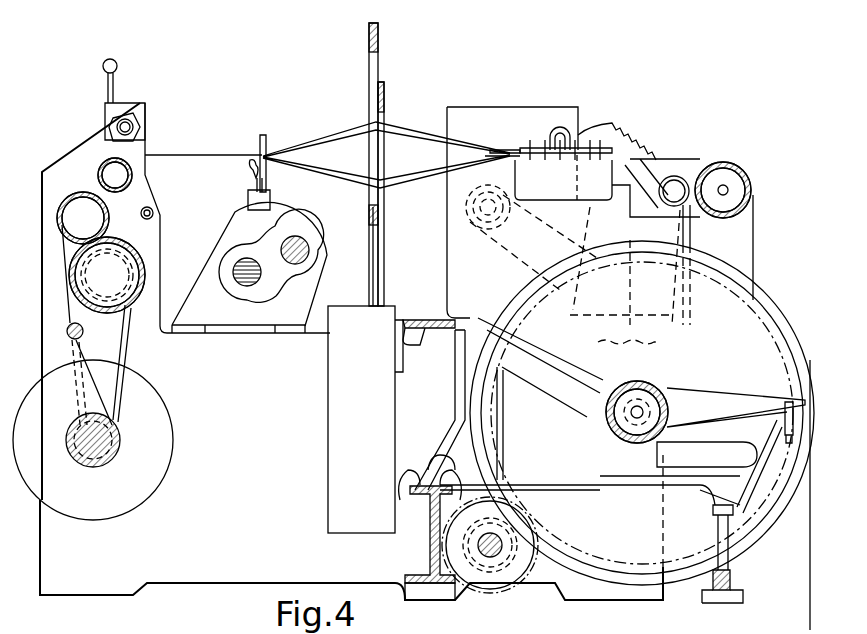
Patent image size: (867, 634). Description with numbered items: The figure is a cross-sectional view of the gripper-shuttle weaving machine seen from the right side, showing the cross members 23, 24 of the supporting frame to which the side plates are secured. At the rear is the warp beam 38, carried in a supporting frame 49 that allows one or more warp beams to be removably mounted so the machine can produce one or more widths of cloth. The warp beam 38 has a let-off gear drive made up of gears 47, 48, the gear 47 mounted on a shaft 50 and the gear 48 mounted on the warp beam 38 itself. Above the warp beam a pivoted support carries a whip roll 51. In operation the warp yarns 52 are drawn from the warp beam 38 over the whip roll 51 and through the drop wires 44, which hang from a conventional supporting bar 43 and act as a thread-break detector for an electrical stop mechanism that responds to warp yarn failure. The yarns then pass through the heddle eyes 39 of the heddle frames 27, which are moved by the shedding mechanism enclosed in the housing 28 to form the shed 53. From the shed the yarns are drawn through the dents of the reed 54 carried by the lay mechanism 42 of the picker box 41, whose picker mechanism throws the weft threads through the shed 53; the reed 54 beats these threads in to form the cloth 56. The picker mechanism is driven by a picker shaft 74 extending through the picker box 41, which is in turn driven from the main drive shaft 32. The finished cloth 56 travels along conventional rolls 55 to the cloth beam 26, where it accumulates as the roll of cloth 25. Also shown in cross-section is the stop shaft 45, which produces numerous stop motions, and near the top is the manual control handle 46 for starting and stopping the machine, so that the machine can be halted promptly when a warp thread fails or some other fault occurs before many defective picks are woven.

The cross member 23 is at (438, 338).
The cross member 24 is at (430, 548).
The roll of cloth 25 is at (116, 420).
The cloth beam 26 is at (118, 452).
The heddle frames 27 is at (380, 32).
The housing 28 is at (328, 430).
The main drive shaft 32 is at (302, 270).
The warp beam 38 is at (664, 380).
The heddle eyes 39 is at (380, 190).
The picker box 41 is at (222, 338).
The lay mechanism 42 is at (266, 182).
The supporting bar 43 is at (578, 160).
The drop wires 44 is at (580, 118).
The stop shaft 45 is at (153, 211).
The manual control handle 46 is at (116, 82).
The gear 47 is at (512, 568).
The gear 48 is at (622, 570).
The supporting frame 49 is at (644, 487).
The shaft 50 is at (494, 556).
The whip roll 51 is at (740, 165).
The warp yarns 52 is at (680, 162).
The shed 53 is at (350, 118).
The reed 54 is at (268, 140).
The rolls 55 is at (108, 226).
The cloth 56 is at (212, 154).
The picker shaft 74 is at (252, 247).